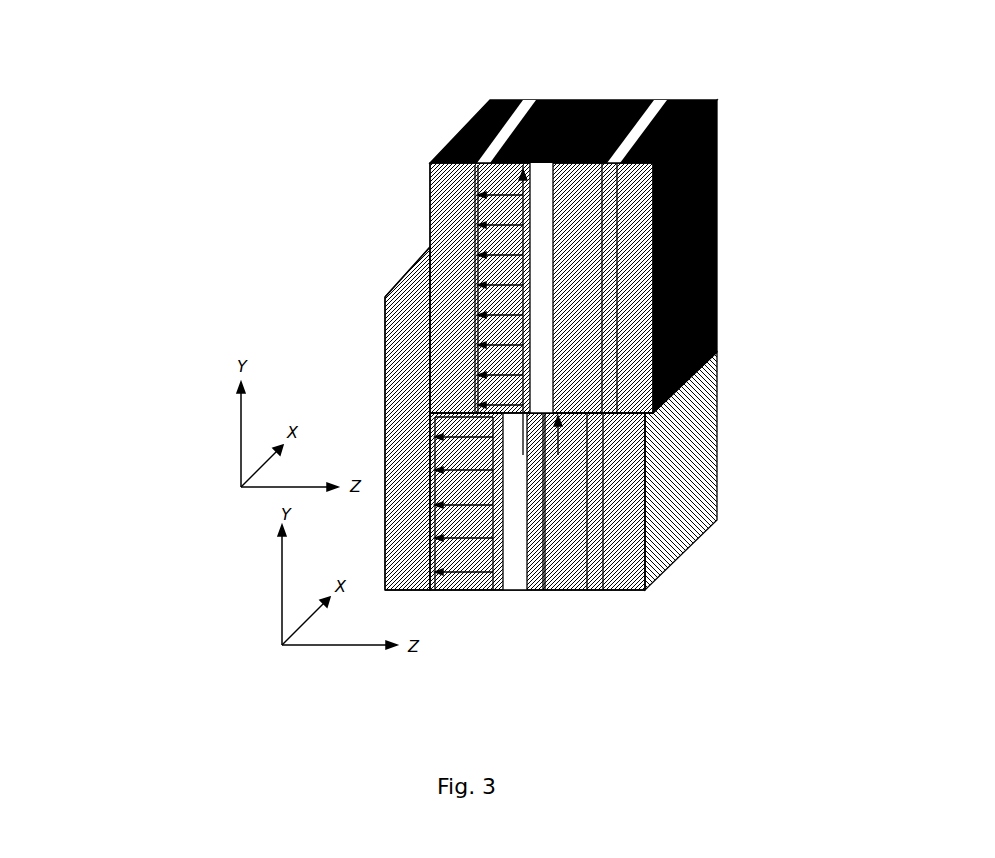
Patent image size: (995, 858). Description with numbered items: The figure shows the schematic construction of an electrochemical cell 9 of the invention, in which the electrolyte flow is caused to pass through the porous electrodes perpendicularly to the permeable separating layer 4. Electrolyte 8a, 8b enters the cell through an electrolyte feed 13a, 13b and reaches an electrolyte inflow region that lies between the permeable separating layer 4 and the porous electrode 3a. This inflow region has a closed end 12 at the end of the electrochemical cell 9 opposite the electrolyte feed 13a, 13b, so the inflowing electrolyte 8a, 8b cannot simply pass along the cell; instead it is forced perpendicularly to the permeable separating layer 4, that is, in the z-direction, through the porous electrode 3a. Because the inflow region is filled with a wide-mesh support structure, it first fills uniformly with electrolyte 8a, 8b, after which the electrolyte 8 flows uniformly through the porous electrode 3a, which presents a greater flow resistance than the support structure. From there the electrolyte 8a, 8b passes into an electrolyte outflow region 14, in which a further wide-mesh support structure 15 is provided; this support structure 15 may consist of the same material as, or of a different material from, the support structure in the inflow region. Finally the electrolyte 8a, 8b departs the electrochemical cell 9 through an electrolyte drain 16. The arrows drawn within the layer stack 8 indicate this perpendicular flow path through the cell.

The porous electrode 3a is at (430, 322).
The permeable separating layer 4 is at (388, 370).
The electrolyte 8 is at (536, 285).
The electrolyte 8a is at (475, 165).
The electrolyte 8b is at (667, 149).
The electrochemical cell 9 is at (737, 122).
The closed end 12 is at (585, 100).
The electrolyte feed 13a is at (453, 697).
The electrolyte feed 13b is at (582, 462).
The electrolyte outflow region 14 is at (430, 203).
The further wide-mesh support structure 15 is at (420, 255).
The electrolyte drain 16 is at (430, 247).